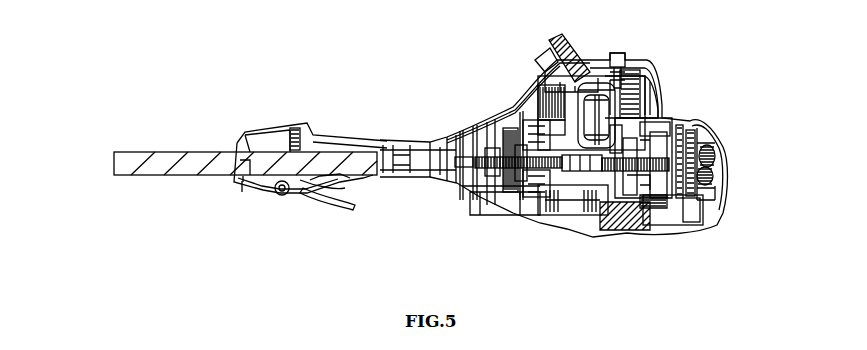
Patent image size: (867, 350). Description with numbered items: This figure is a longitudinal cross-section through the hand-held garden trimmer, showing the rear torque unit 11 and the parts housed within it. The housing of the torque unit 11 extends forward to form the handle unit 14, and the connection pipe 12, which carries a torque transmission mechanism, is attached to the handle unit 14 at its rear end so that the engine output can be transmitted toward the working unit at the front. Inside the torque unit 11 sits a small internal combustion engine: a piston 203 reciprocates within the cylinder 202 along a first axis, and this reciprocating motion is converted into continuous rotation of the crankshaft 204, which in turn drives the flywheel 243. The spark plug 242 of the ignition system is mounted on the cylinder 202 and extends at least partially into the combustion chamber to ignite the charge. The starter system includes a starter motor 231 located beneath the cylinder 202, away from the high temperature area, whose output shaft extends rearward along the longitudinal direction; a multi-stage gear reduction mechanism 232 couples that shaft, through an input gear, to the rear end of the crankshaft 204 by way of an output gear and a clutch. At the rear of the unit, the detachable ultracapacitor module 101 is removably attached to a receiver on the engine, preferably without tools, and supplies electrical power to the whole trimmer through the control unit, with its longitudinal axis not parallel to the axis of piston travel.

The torque unit 11 is at (563, 242).
The connection pipe 12 is at (143, 185).
The handle unit 14 is at (337, 108).
The ultracapacitor module 101 is at (720, 150).
The cylinder 202 is at (652, 84).
The piston 203 is at (622, 60).
The crankshaft 204 is at (522, 92).
The starter motor 231 is at (657, 220).
The reduction mechanism 232 is at (691, 133).
The spark plug 242 is at (570, 50).
The flywheel 243 is at (530, 200).